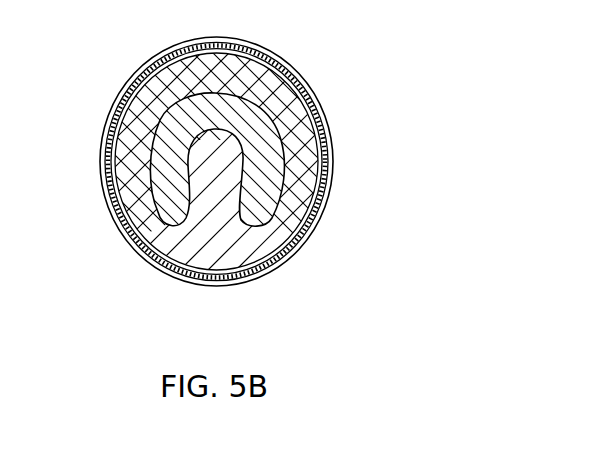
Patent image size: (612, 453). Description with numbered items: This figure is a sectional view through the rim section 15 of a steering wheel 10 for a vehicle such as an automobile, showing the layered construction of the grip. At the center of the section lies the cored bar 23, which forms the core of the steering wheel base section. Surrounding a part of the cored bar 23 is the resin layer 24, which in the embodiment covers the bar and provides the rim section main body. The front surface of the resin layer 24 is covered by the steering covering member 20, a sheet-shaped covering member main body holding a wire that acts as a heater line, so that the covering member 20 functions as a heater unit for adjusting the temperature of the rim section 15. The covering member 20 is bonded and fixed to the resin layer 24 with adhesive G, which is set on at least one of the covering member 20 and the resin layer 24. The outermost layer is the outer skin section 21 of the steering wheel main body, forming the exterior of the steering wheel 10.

The steering wheel 10 is at (343, 45).
The rim section 15 is at (337, 162).
The steering covering member 20 is at (320, 228).
The outer skin section 21 is at (254, 44).
The cored bar 23 is at (140, 257).
The resin layer 24 is at (217, 258).
The adhesive G is at (287, 262).